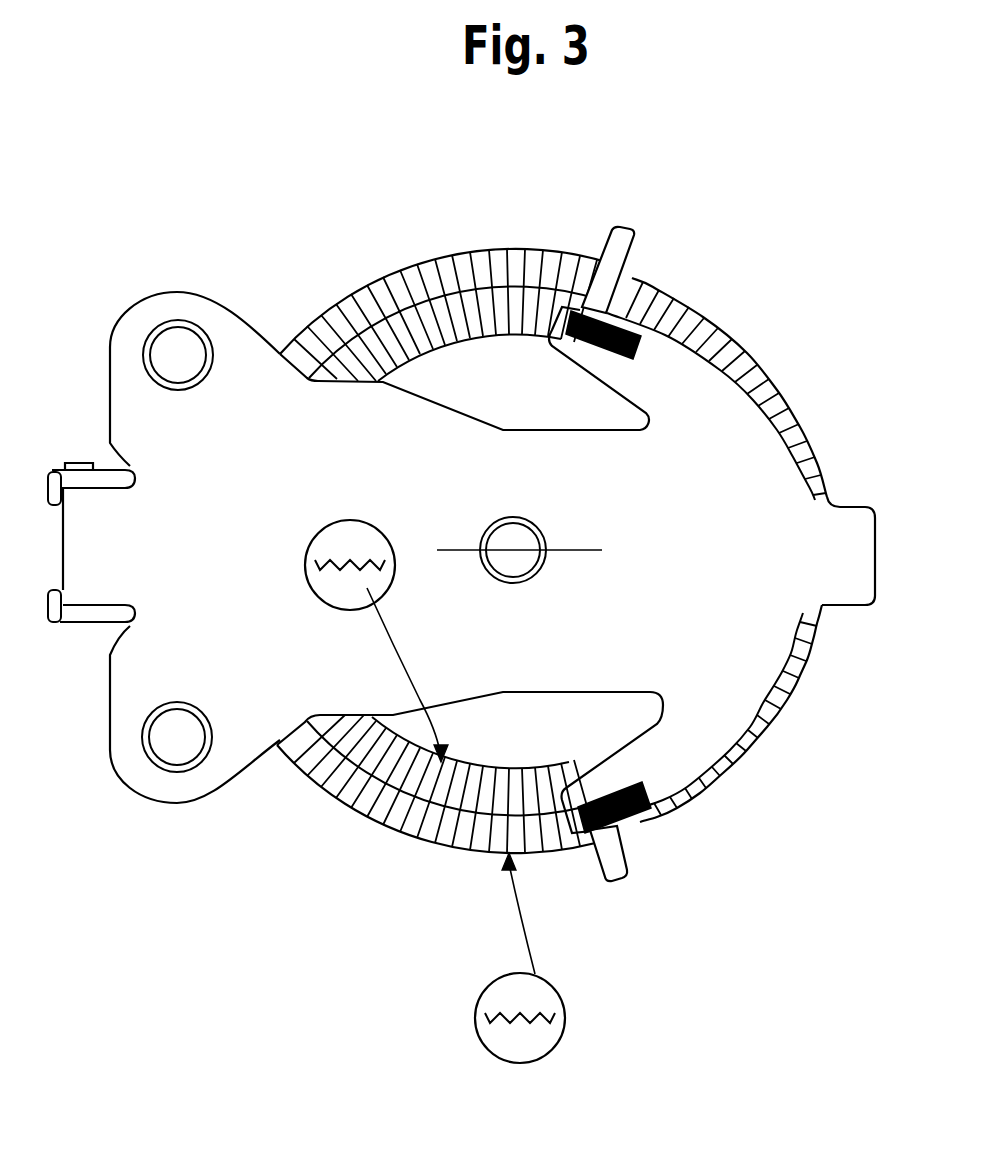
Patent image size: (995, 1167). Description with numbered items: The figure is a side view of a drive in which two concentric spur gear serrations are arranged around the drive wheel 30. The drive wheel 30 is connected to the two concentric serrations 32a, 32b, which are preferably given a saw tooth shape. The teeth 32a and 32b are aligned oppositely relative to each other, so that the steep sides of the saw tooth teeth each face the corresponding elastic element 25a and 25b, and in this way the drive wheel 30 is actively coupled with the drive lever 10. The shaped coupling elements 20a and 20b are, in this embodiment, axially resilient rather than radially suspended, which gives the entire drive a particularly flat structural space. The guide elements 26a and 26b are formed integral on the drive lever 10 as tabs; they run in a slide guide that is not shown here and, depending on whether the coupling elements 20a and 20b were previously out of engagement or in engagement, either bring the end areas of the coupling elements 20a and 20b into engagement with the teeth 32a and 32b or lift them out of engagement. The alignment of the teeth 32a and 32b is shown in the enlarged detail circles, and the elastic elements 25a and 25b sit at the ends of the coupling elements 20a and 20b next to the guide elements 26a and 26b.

The drive lever 10 is at (269, 413).
The drive wheel 30 is at (390, 272).
The coupling element 20a is at (673, 375).
The coupling element 20b is at (688, 763).
The elastic element 25a is at (660, 335).
The elastic element 25b is at (643, 830).
The guide element 26a is at (616, 228).
The guide element 26b is at (620, 882).
The serration 32a is at (345, 805).
The serration 32b is at (435, 853).